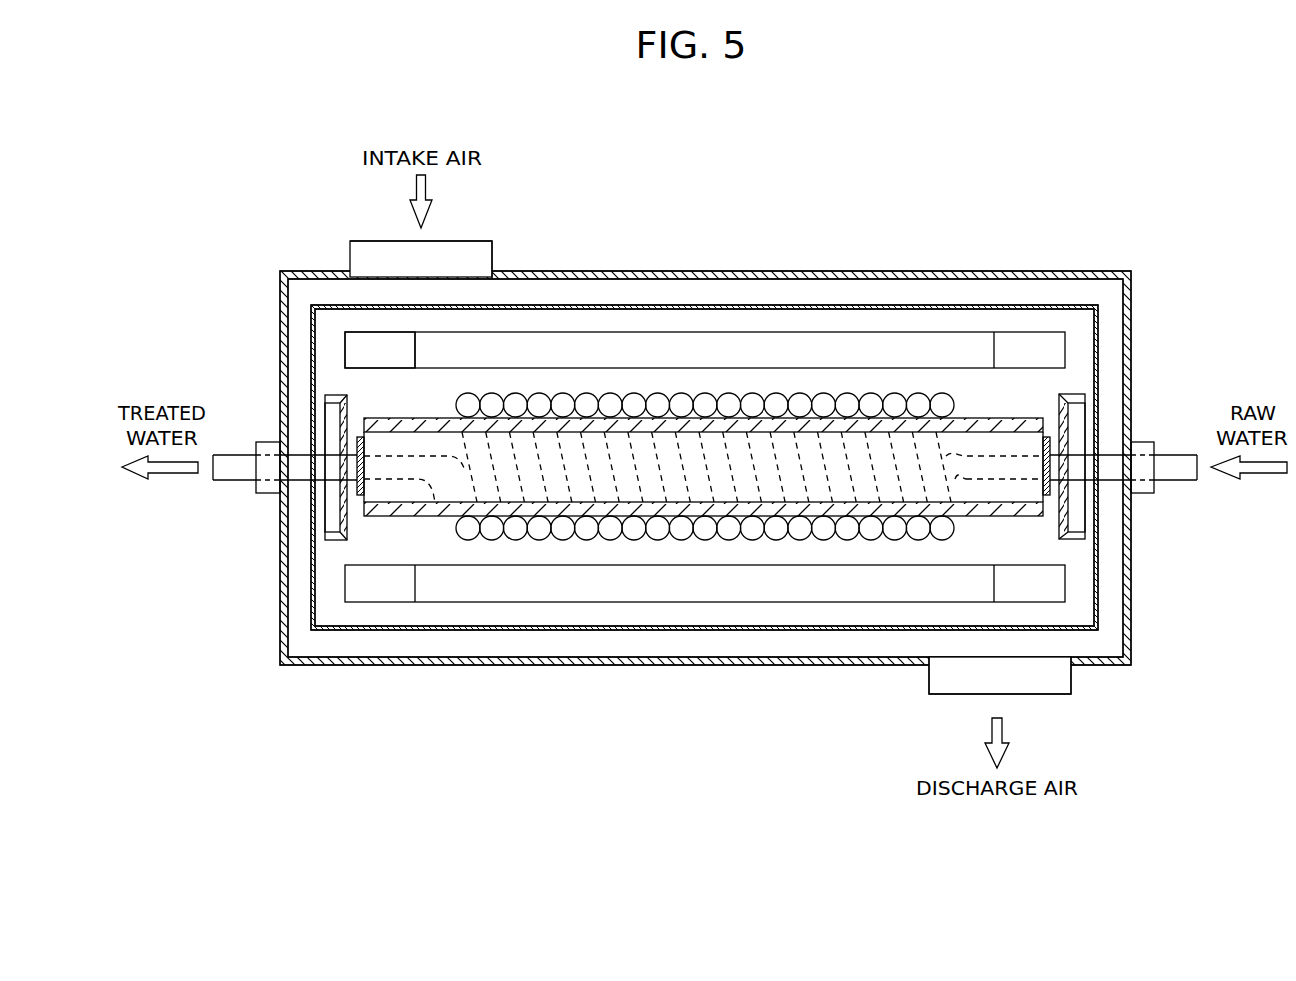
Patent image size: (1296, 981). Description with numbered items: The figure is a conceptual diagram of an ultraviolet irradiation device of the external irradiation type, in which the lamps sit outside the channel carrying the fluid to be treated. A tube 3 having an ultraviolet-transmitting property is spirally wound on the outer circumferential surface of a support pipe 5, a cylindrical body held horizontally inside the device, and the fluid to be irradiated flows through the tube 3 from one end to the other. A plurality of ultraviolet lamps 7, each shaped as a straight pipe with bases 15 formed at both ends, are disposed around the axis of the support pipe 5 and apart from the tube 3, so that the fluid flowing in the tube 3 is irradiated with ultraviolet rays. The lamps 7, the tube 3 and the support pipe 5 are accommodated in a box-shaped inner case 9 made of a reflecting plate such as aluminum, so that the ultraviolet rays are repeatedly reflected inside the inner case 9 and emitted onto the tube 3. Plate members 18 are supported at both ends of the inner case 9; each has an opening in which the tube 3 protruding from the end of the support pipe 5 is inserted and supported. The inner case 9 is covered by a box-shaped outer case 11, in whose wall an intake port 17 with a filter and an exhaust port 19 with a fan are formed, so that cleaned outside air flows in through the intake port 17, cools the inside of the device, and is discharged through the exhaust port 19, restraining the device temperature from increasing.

The tube 3 is at (937, 395).
The support pipe 5 is at (1019, 418).
The ultraviolet lamps 7 is at (590, 332).
The inner case 9 is at (873, 305).
The outer case 11 is at (1131, 317).
The bases 15 is at (352, 332).
The intake port 17 is at (473, 241).
The plate members 18 is at (338, 395).
The exhaust port 19 is at (1071, 678).